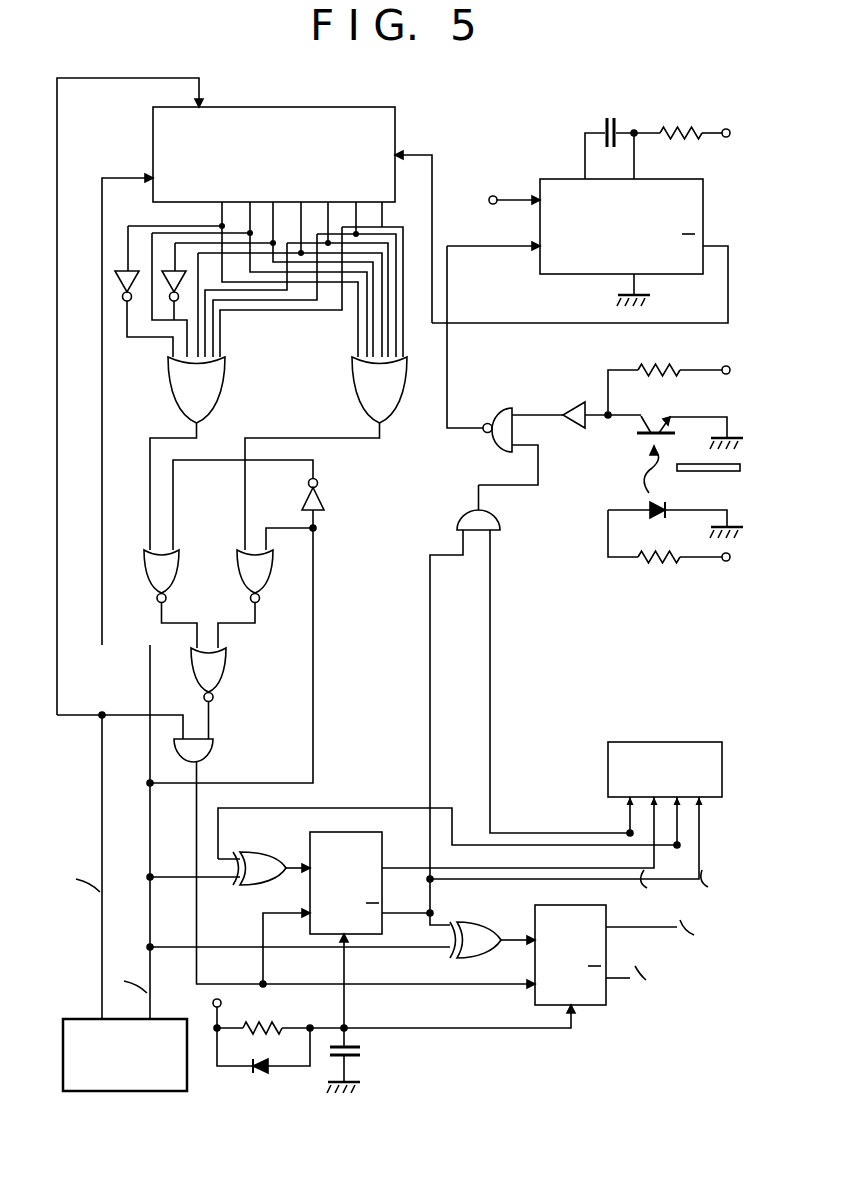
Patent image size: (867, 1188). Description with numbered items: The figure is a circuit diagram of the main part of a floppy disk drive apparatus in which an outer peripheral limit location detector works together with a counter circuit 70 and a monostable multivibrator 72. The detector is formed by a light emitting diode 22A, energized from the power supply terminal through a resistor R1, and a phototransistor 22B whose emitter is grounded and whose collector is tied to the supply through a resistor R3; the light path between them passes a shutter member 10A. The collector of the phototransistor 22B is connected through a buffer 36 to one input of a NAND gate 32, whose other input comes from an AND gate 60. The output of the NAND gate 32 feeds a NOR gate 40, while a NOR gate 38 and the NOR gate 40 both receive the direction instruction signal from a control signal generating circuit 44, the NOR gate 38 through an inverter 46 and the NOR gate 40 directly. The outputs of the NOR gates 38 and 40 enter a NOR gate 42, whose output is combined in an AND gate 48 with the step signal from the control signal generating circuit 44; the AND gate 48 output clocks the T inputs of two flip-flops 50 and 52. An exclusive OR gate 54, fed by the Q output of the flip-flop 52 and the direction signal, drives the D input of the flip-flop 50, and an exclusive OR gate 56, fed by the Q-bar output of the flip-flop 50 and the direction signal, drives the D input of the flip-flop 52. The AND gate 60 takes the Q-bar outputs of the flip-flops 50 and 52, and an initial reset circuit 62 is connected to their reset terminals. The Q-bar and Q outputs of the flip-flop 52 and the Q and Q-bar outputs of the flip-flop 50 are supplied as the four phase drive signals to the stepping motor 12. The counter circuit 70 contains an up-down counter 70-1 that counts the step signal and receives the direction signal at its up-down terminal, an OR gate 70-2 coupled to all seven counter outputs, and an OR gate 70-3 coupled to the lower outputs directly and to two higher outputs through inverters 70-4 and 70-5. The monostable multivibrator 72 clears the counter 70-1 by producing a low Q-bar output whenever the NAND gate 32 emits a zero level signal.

The counter circuit 70 is at (447, 167).
The up-down counter 70-1 is at (272, 118).
The OR gate 70-2 is at (362, 392).
The OR gate 70-3 is at (219, 374).
The inverter 70-4 is at (119, 284).
The inverter 70-5 is at (165, 282).
The monostable multivibrator 72 is at (693, 191).
The NAND gate 32 is at (502, 441).
The buffer 36 is at (576, 406).
The resistor R3 is at (654, 364).
The phototransistor 22B is at (653, 418).
The light emitting diode 22A is at (650, 504).
The shutter blade 10A is at (716, 471).
The resistor R1 is at (654, 548).
The AND gate 60 is at (493, 524).
The inverter 46 is at (318, 500).
The NOR gate 38 is at (152, 577).
The NOR gate 40 is at (240, 576).
The NOR gate 42 is at (215, 676).
The AND gate 48 is at (212, 742).
The control signal generating circuit 44 is at (80, 1019).
The exclusive OR gate 54 is at (258, 855).
The flip-flop 50 is at (378, 848).
The exclusive OR gate 56 is at (476, 930).
The flip-flop 52 is at (607, 997).
The stepping motor 12 is at (690, 742).
The initial reset circuit 62 is at (259, 1058).